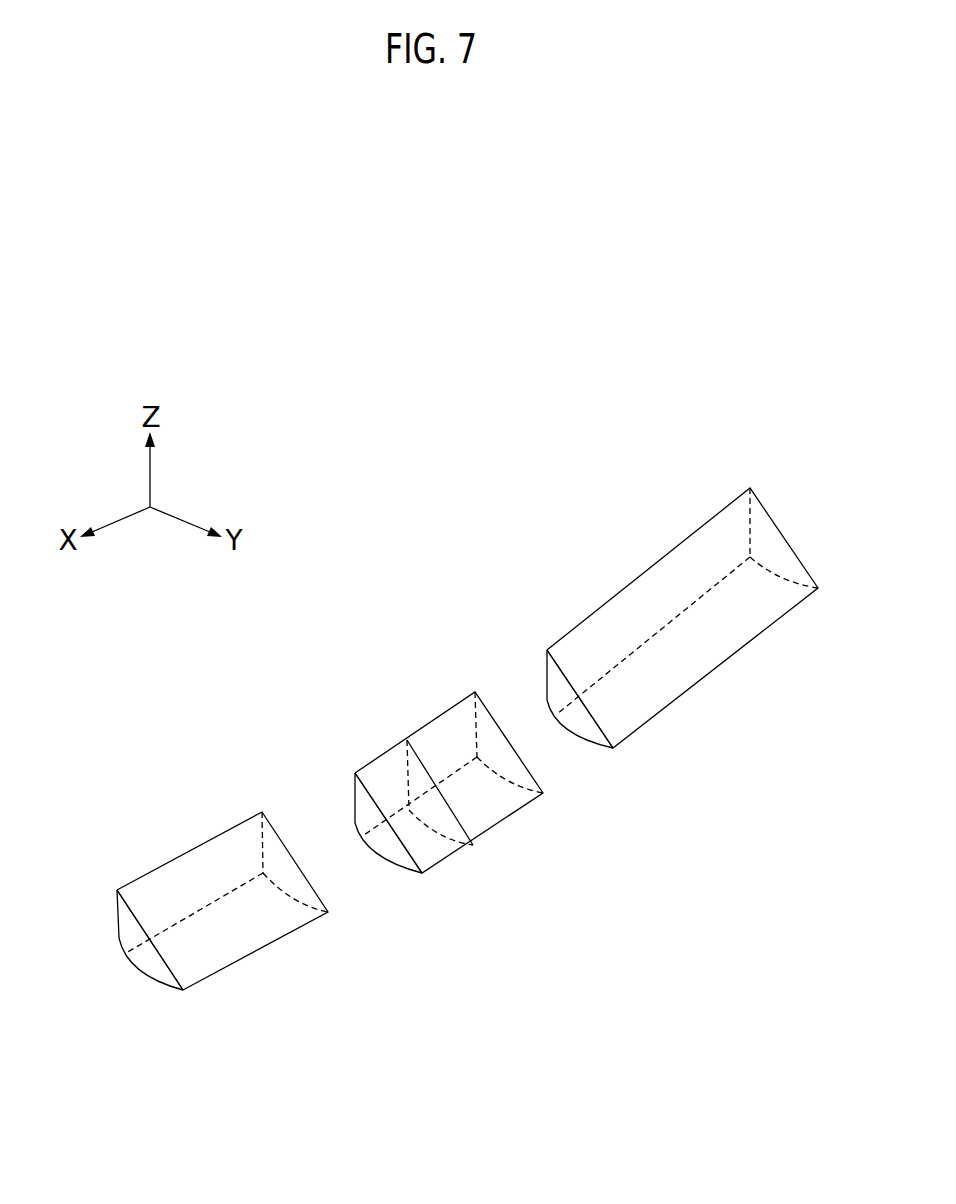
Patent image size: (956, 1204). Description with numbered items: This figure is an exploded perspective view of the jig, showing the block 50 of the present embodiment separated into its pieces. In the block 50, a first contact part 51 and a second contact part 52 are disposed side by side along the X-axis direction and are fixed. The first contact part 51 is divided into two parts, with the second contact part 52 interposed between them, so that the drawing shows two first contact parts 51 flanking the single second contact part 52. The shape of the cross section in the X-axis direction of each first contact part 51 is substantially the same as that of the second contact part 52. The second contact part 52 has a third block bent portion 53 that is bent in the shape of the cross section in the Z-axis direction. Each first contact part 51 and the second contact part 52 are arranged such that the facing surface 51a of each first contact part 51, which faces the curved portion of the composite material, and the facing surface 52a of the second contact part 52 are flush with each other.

The block 50 is at (781, 476).
The first contact part 51 is at (702, 665).
The facing surface 51a is at (545, 677).
The second contact part 52 is at (507, 810).
The facing surface 52a is at (348, 790).
The third block bent portion 53 is at (420, 763).